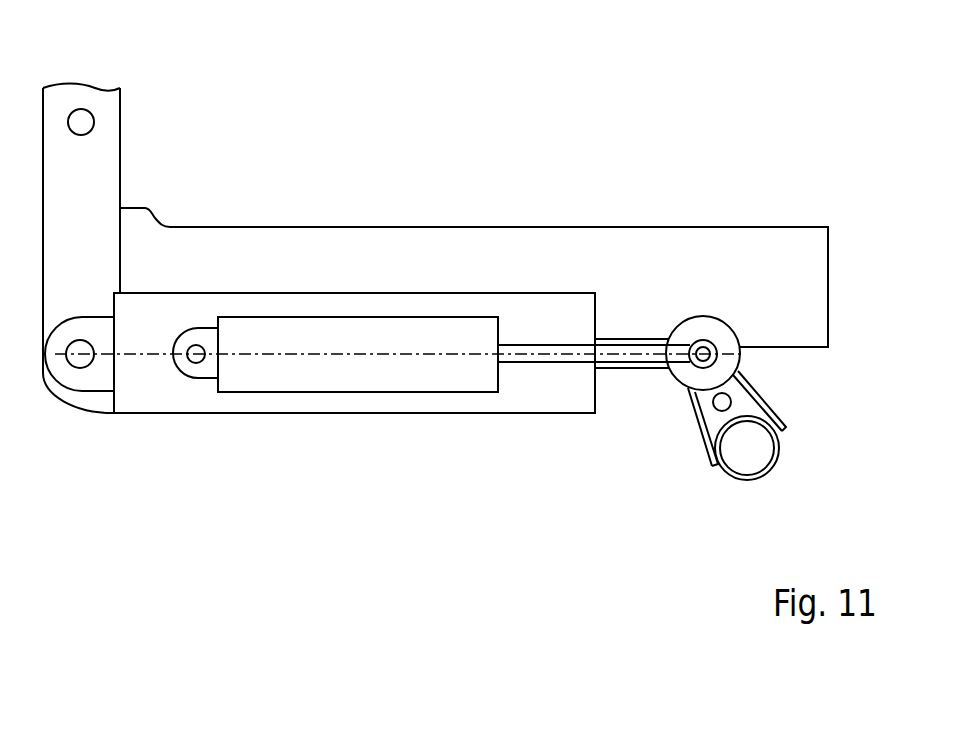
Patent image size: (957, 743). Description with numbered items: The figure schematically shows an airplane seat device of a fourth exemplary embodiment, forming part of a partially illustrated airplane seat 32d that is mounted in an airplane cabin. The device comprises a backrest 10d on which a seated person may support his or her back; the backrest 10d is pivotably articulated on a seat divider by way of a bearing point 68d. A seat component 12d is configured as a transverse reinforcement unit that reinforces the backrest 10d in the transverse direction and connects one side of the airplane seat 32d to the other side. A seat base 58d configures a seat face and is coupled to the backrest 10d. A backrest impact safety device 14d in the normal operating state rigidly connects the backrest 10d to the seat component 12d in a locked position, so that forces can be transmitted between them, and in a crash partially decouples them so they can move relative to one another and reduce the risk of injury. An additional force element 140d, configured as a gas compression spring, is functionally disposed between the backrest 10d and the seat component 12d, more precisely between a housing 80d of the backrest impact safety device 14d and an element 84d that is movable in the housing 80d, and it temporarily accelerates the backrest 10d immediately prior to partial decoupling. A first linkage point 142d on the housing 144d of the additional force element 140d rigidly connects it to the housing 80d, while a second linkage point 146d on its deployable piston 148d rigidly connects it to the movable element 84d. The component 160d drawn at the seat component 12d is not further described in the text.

The backrest 10d is at (81, 153).
The seat component 12d is at (750, 478).
The backrest impact safety device 14d is at (482, 285).
The airplane seat 32d is at (604, 98).
The seat base 58d is at (768, 275).
The bearing point 68d is at (80, 120).
The housing 80d is at (376, 305).
The element 84d is at (628, 340).
The additional force element 140d is at (360, 367).
The first linkage point 142d is at (195, 366).
The housing 144d is at (270, 337).
The second linkage point 146d is at (688, 362).
The deployable piston 148d is at (538, 362).
The clamp 160d is at (786, 452).